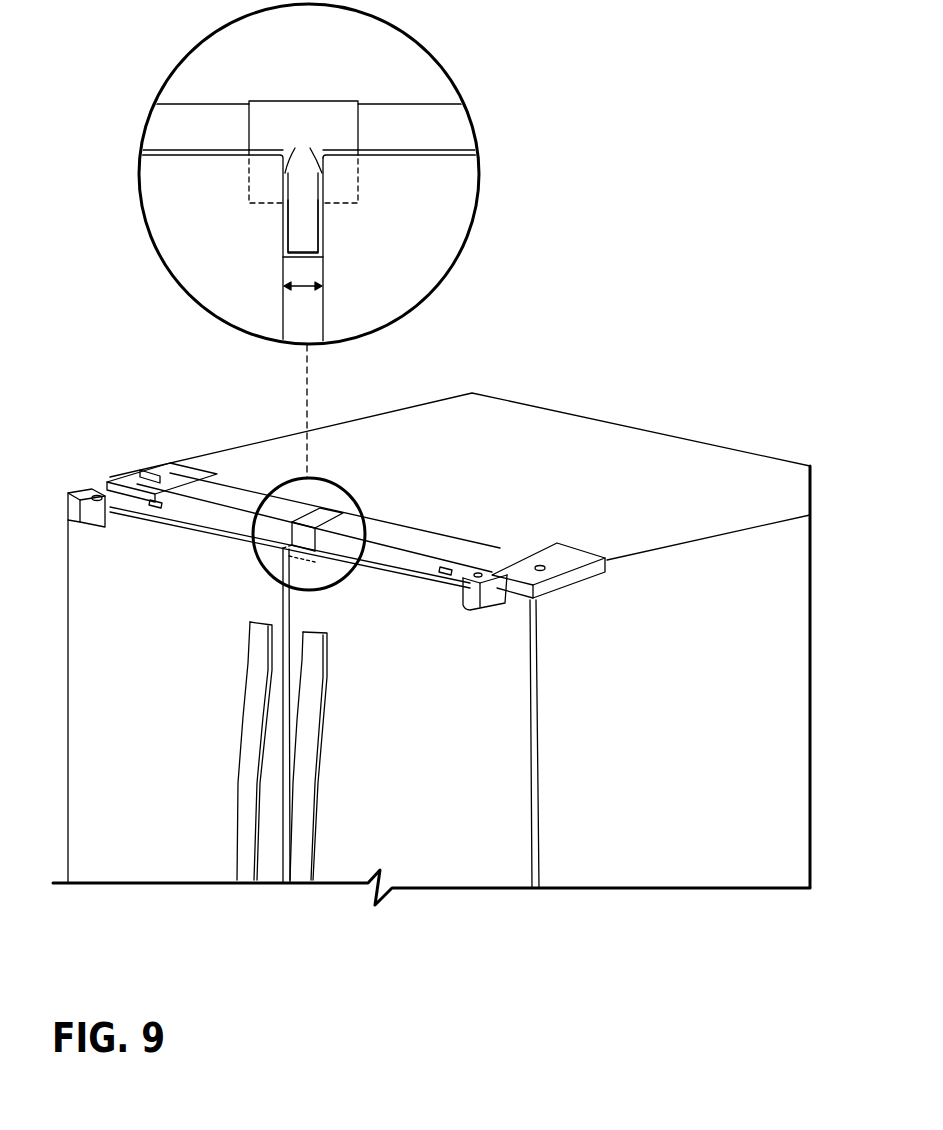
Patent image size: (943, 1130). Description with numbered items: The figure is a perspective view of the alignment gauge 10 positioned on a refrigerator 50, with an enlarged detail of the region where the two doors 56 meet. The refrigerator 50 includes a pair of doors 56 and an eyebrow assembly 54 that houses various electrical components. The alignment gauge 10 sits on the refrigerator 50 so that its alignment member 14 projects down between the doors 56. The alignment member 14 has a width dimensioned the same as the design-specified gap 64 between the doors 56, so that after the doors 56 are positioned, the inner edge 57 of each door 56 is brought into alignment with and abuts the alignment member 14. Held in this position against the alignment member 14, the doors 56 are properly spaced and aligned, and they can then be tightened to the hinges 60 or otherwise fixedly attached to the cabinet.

The alignment gauge 10 is at (333, 503).
The alignment member 14 is at (300, 223).
The refrigerator 50 is at (645, 425).
The eyebrow assembly 54 is at (410, 127).
The doors 56 is at (190, 208).
The inner edge 57 is at (295, 150).
The hinges 60 is at (122, 487).
The gap 64 is at (305, 290).